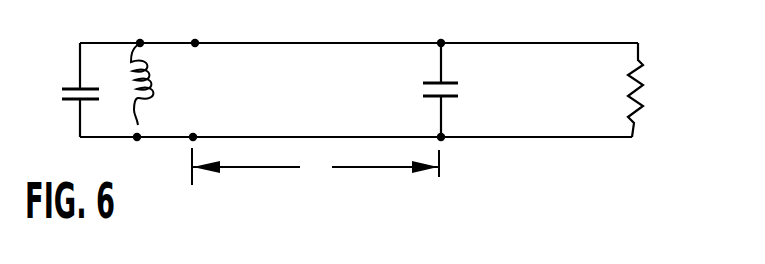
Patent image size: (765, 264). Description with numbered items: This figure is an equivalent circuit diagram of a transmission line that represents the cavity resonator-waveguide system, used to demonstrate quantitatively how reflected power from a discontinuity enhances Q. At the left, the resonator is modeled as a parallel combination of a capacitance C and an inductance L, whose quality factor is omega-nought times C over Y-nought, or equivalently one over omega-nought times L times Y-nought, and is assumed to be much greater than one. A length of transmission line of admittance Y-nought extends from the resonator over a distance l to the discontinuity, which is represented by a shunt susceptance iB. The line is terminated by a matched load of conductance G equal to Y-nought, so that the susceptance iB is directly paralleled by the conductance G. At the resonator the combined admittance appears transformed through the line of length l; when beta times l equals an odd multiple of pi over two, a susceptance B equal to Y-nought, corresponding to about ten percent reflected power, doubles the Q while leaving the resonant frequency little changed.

The capacitance C is at (63, 90).
The inductance L is at (150, 84).
The susceptance of the discontinuity iB is at (421, 90).
The load conductance G is at (669, 90).
The distance to the discontinuity l is at (315, 169).